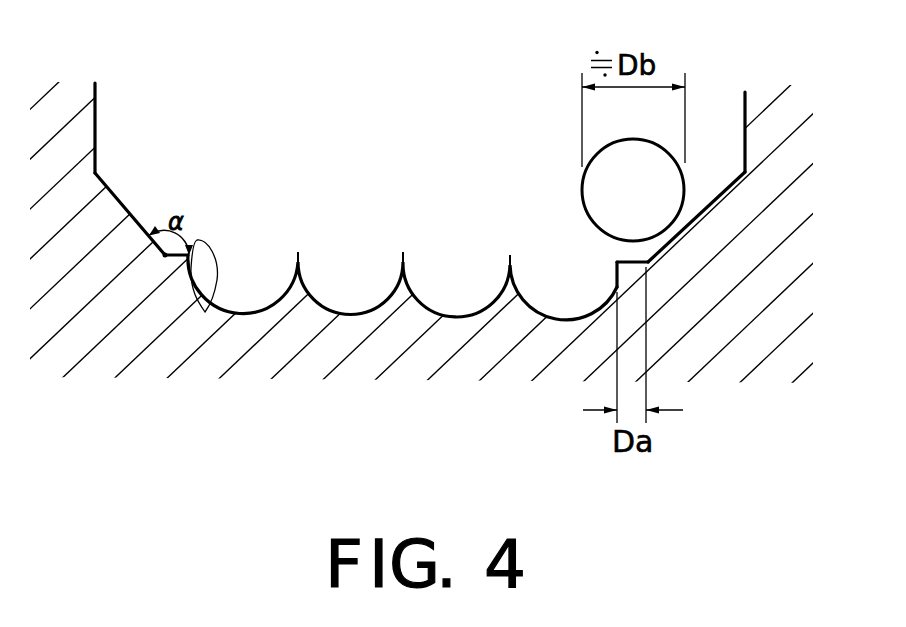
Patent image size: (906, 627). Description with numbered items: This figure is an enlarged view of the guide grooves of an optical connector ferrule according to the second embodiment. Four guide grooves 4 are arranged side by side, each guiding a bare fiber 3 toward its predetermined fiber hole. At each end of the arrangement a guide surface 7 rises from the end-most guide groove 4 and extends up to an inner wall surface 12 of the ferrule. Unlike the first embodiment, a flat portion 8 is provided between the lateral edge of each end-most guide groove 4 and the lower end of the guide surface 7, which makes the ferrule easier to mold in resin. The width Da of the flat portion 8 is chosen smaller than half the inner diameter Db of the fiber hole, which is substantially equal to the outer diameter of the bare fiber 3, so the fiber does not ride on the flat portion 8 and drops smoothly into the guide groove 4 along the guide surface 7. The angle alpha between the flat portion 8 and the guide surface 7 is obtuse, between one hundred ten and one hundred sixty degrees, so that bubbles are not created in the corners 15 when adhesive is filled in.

The bare fiber 3 is at (582, 190).
The guide groove 4 is at (245, 298).
The guide surface 7 is at (121, 203).
The flat portion 8 is at (205, 312).
The inner wall surface 12 is at (95, 128).
The corner 15 is at (165, 256).